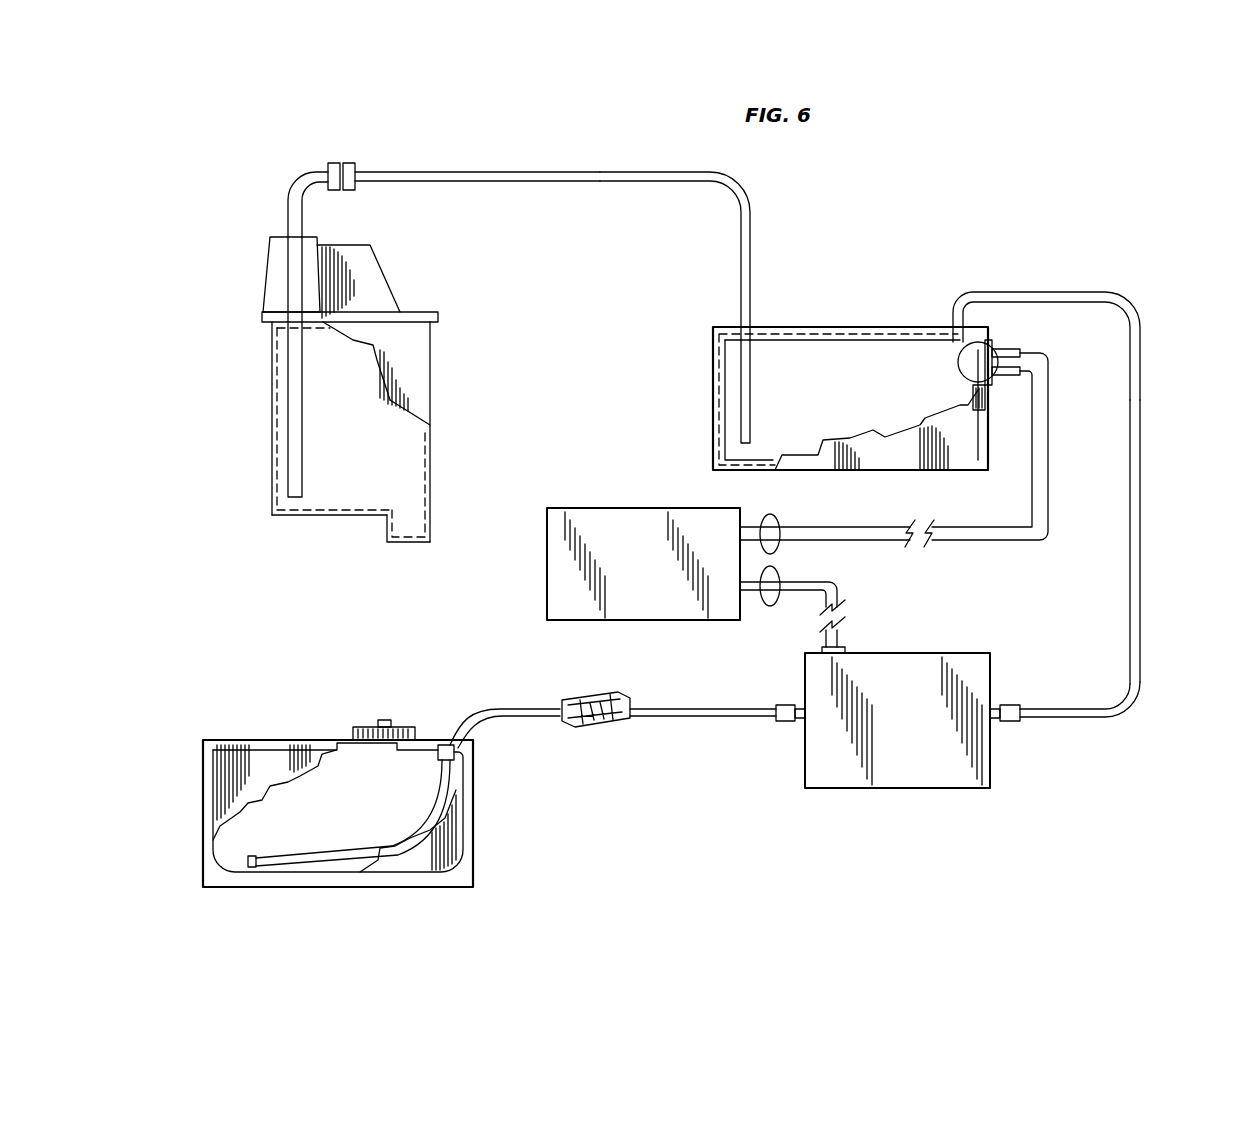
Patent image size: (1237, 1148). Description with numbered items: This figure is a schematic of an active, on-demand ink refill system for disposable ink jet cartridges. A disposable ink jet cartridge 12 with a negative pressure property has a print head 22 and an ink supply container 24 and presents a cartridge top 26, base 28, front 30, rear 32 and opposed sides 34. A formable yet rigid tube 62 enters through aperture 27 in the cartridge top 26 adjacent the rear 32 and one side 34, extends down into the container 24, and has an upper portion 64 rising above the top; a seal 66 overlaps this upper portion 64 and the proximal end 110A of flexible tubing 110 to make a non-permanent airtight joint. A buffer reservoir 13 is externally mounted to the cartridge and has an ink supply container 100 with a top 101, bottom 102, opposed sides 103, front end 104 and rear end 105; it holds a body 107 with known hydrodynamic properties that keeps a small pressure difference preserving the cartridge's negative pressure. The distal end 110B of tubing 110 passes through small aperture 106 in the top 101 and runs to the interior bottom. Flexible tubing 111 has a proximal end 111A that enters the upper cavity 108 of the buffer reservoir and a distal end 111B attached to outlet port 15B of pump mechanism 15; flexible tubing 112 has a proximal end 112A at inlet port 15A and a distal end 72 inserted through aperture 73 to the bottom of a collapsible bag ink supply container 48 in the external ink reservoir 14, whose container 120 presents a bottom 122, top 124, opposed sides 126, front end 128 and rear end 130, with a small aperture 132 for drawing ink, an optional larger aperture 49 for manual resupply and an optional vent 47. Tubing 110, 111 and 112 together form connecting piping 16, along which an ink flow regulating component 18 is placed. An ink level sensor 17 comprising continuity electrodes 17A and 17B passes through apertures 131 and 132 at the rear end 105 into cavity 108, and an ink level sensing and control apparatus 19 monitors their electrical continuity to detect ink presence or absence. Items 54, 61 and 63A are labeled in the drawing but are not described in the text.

The disposable ink jet cartridge 12 is at (254, 262).
The buffer reservoir 13 is at (883, 200).
The external ink reservoir 14 is at (302, 690).
The pump mechanism 15 is at (905, 650).
The inlet port 15A is at (788, 726).
The outlet port 15B is at (1010, 700).
The connecting piping 16 is at (558, 165).
The ink level sensor 17 is at (1022, 355).
The continuity electrode 17A is at (992, 350).
The continuity electrode 17B is at (1030, 380).
The ink flow regulating component 18 is at (590, 695).
The ink level sensing and control apparatus 19 is at (547, 525).
The print head 22 is at (400, 545).
The ink supply container 24 is at (326, 392).
The cartridge top 26 is at (360, 245).
The aperture 27 is at (285, 236).
The base 28 is at (340, 522).
The front 30 is at (432, 432).
The rear 32 is at (272, 456).
The opposed sides 34 is at (410, 347).
The vent 47 is at (388, 720).
The ink supply container 48 is at (435, 853).
The larger aperture 49 is at (366, 727).
The electrical connectors 54 is at (792, 582).
The tube outlet end 61 is at (276, 513).
The rigid tube 62 is at (285, 342).
The tube sleeve in reservoir 63A is at (936, 340).
The upper portion 64 is at (292, 178).
The seal 66 is at (345, 163).
The distal end 72 is at (250, 862).
The aperture 73 is at (470, 748).
The ink supply container 100 is at (778, 328).
The top 101 is at (868, 328).
The bottom 102 is at (862, 472).
The opposed sides 103 is at (898, 456).
The front end 104 is at (713, 420).
The rear end 105 is at (995, 440).
The small aperture 106 is at (760, 328).
The body 107 is at (797, 400).
The upper cavity 108 is at (890, 328).
The flexible tubing 110 is at (640, 172).
The proximal end 110A is at (431, 172).
The distal end 110B is at (726, 440).
The flexible tubing 111 is at (1150, 435).
The proximal end 111A is at (1005, 292).
The distal end 111B is at (1025, 705).
The flexible tubing 112 is at (690, 720).
The proximal end 112A is at (786, 707).
The ink supply container 120 is at (490, 796).
The bottom 122 is at (410, 888).
The top 124 is at (276, 740).
The opposed sides 126 is at (226, 745).
The front end 128 is at (475, 828).
The rear end 130 is at (206, 840).
The aperture 131 is at (958, 356).
The small aperture 132 is at (944, 368).